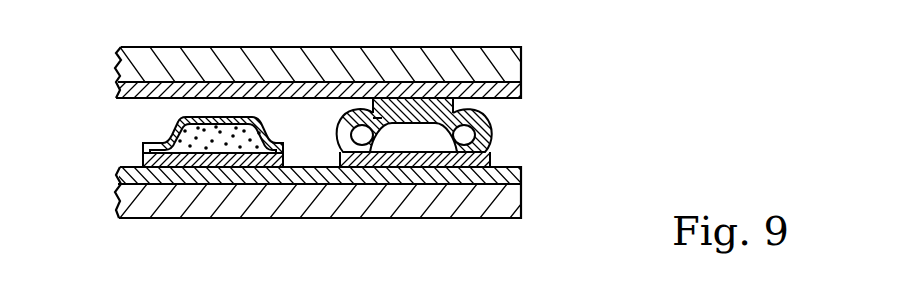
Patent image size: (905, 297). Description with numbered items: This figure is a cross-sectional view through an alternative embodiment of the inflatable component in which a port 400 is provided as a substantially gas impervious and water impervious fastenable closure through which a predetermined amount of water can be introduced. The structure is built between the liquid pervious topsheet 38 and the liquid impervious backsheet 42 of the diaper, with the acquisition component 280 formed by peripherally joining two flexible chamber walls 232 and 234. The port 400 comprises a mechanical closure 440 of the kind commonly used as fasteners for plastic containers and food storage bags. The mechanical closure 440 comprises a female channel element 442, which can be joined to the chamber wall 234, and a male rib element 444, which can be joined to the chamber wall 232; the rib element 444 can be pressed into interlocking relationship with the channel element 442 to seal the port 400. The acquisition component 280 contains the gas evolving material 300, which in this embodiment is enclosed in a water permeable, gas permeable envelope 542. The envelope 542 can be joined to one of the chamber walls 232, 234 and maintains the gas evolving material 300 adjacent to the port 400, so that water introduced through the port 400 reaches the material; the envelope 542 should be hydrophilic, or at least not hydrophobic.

The liquid pervious topsheet 38 is at (283, 56).
The chamber wall 232 is at (117, 91).
The liquid impervious backsheet 42 is at (251, 210).
The chamber wall 234 is at (117, 168).
The acquisition component 280 is at (236, 97).
The gas evolving material 300 is at (167, 120).
The envelope 542 is at (163, 142).
The port 400 is at (473, 175).
The mechanical closure 440 is at (513, 120).
The female channel element 442 is at (487, 148).
The male rib element 444 is at (383, 155).